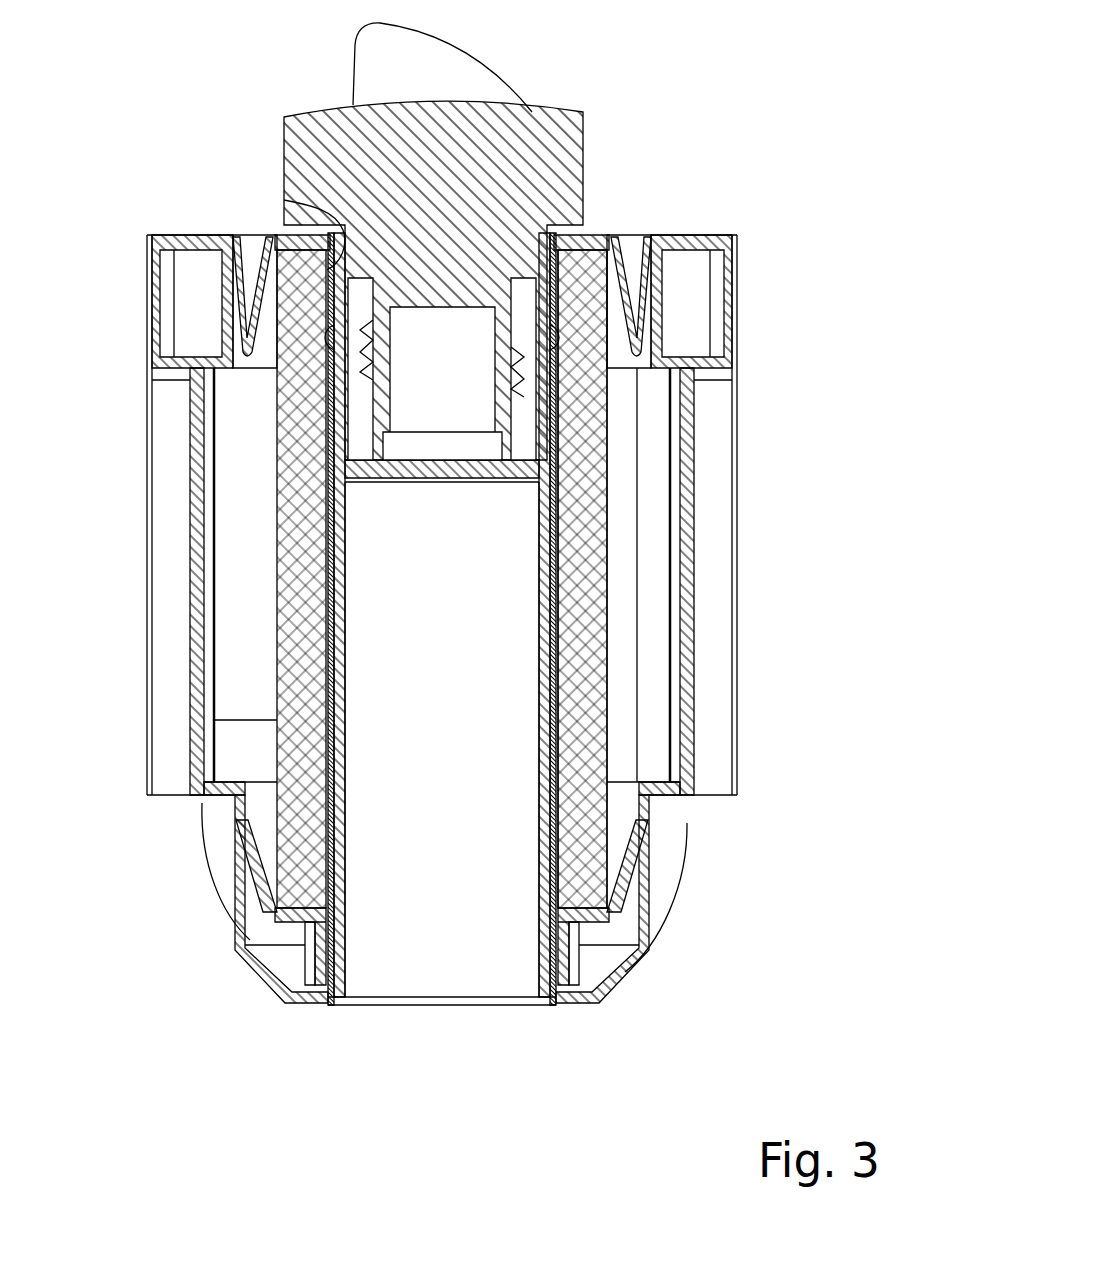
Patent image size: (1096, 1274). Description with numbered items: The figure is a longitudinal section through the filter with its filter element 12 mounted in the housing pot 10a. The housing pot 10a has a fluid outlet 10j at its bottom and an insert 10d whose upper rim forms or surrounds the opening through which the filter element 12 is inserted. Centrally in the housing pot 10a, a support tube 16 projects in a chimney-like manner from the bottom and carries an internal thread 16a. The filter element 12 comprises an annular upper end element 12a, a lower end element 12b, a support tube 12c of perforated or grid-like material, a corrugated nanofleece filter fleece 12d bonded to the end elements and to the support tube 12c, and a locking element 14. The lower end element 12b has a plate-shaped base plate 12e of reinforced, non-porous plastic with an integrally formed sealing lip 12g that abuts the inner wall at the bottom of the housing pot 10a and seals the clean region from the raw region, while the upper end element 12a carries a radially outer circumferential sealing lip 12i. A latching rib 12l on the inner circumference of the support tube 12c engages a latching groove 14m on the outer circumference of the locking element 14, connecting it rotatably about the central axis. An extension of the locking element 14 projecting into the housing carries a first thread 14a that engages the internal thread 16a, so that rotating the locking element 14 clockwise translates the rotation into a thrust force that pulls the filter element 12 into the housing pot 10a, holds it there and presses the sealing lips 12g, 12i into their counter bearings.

The housing pot 10a is at (687, 680).
The insert 10d is at (210, 237).
The fluid outlet 10j is at (427, 930).
The filter element 12 is at (588, 534).
The upper end element 12a is at (663, 290).
The lower end element 12b is at (277, 920).
The support tube 12c is at (562, 450).
The filter fleece 12d is at (612, 403).
The base plate 12e is at (583, 920).
The sealing lip 12g is at (640, 855).
The sealing lip 12i is at (223, 288).
The latching rib 12l is at (300, 248).
The locking element 14 is at (598, 125).
The first thread 14a is at (242, 351).
The latching groove 14m is at (343, 240).
The support tube 16 is at (333, 594).
The internal thread 16a is at (333, 328).